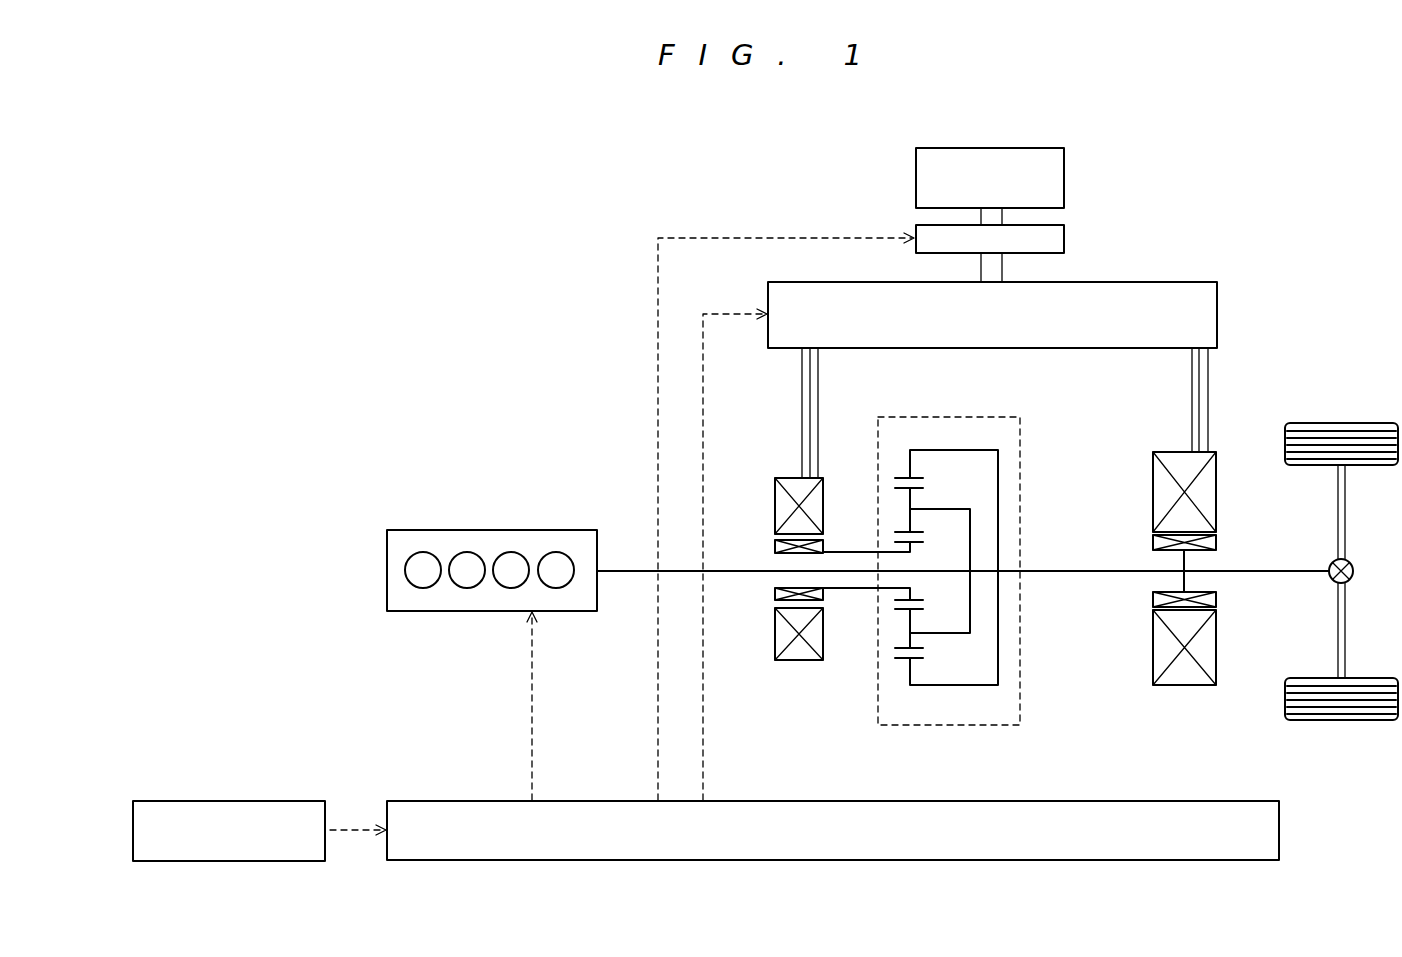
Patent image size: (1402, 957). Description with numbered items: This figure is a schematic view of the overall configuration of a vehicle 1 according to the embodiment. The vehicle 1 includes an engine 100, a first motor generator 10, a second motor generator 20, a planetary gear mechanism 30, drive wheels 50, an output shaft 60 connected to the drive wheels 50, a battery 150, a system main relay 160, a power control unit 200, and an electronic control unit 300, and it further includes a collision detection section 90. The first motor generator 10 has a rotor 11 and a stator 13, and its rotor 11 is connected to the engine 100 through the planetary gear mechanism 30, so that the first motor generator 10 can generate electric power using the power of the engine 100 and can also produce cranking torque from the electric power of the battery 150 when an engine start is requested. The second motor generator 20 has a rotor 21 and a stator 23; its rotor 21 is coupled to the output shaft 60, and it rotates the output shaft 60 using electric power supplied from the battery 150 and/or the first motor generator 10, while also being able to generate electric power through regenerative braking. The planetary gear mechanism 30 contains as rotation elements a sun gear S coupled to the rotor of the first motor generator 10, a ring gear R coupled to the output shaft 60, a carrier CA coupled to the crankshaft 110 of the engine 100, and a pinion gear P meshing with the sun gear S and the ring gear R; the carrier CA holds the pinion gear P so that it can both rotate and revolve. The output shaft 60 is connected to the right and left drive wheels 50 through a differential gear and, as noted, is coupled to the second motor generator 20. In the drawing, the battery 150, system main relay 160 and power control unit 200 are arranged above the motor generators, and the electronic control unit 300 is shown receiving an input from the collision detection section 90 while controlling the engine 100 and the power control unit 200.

The vehicle 1 is at (1203, 153).
The first motor generator 10 is at (769, 504).
The rotor 11 is at (773, 545).
The stator 13 is at (773, 505).
The second motor generator 20 is at (1154, 516).
The rotor 21 is at (1151, 543).
The stator 23 is at (1151, 503).
The planetary gear mechanism 30 is at (934, 554).
The ring gear R is at (905, 478).
The pinion gear P is at (905, 490).
The sun gear S is at (915, 543).
The carrier CA is at (962, 509).
The drive wheels 50 is at (1363, 423).
The output shaft 60 is at (1270, 571).
The collision detection section 90 is at (262, 801).
The engine 100 is at (430, 530).
The crankshaft 110 is at (622, 571).
The battery 150 is at (1066, 175).
The system main relay 160 is at (1066, 235).
The power control unit 200 is at (1160, 282).
The electronic control unit 300 is at (1280, 832).